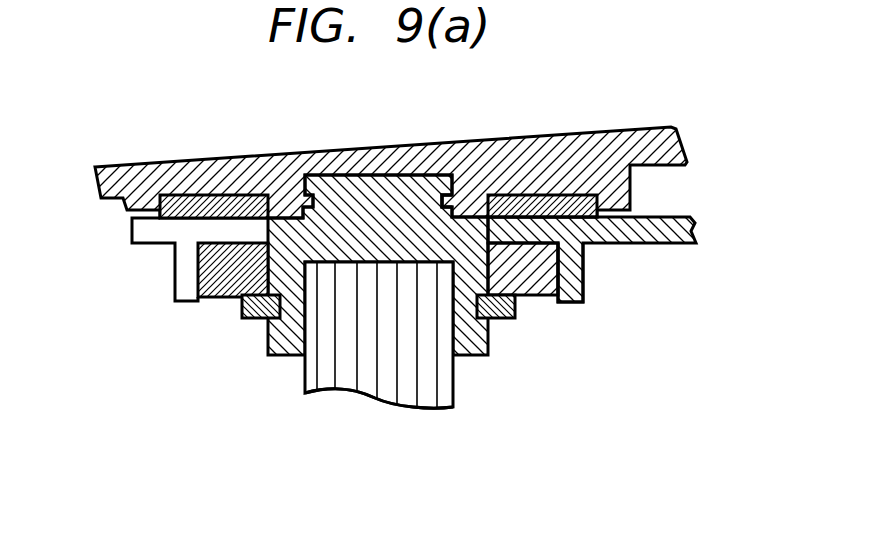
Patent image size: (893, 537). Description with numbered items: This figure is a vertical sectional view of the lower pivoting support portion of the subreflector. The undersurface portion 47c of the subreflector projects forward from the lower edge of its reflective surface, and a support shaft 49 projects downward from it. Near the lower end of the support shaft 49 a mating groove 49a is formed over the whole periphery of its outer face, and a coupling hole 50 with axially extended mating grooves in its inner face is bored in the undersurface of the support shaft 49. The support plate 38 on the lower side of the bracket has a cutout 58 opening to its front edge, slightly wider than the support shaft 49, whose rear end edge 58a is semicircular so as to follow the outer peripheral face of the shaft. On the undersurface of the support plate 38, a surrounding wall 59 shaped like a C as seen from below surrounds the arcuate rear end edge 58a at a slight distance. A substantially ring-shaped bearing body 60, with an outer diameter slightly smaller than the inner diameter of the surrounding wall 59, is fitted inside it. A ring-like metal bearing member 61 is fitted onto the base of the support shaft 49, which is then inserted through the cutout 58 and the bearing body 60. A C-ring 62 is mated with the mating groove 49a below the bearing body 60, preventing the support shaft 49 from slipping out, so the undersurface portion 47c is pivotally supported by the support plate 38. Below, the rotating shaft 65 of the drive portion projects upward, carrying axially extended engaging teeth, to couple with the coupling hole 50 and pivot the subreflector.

The undersurface portion 47c is at (135, 174).
The cutout 58 is at (208, 228).
The rear end edge 58a is at (472, 228).
The bearing member 61 is at (577, 213).
The support plate 38 is at (697, 213).
The surrounding wall 59 is at (586, 285).
The bearing body 60 is at (218, 288).
The mating groove 49a is at (260, 320).
The C-ring 62 is at (515, 302).
The support shaft 49 is at (490, 343).
The coupling hole 50 is at (450, 330).
The rotating shaft 65 is at (348, 381).